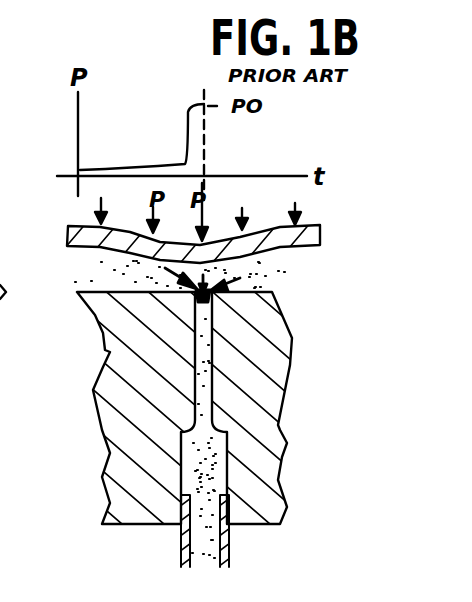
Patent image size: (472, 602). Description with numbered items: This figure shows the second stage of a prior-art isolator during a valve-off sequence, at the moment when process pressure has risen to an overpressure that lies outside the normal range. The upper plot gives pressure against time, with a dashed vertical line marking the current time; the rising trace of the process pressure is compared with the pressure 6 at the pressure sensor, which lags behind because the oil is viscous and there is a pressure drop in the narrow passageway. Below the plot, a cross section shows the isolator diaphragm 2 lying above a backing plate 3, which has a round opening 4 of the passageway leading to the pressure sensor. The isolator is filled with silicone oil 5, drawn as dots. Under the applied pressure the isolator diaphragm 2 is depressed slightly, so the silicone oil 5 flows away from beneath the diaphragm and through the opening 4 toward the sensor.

The isolator diaphragm 2 is at (318, 233).
The backing plate 3 is at (265, 350).
The round opening 4 is at (215, 297).
The silicone oil 5 is at (277, 260).
The pressure at the pressure sensor 6 is at (209, 540).